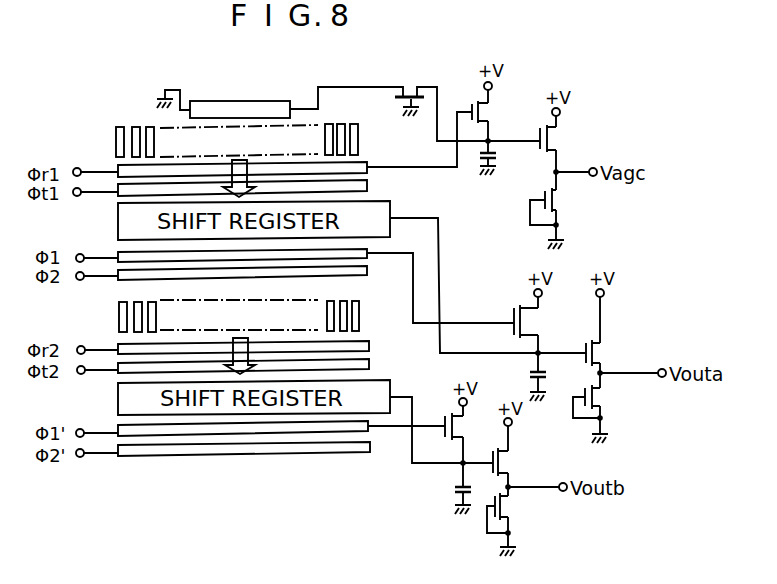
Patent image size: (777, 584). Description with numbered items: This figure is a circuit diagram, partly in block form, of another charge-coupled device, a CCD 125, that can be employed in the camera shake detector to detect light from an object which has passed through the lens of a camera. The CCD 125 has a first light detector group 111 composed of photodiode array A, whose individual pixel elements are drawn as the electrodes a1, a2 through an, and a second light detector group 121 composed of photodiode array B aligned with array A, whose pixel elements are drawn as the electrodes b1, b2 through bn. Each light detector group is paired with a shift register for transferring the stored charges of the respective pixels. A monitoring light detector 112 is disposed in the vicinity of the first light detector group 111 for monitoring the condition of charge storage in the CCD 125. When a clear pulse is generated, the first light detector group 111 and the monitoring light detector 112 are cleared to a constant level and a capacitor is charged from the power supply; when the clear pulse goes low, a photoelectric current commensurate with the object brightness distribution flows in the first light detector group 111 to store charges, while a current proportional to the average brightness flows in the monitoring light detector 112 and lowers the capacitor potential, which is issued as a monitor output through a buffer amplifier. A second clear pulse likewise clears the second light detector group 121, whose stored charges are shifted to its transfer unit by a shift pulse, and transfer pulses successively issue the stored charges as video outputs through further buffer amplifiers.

The CCD 125 is at (138, 105).
The first light detector group 111 is at (302, 132).
The monitoring light detector 112 is at (213, 107).
The second light detector group 121 is at (210, 311).
The n-th transfer electrode of first sensor an is at (117, 128).
The second transfer electrode of first sensor a2 is at (342, 123).
The first transfer electrode of first sensor a1 is at (354, 124).
The n-th transfer electrode of second sensor bn is at (118, 307).
The second transfer electrode of second sensor b2 is at (343, 302).
The first transfer electrode of second sensor b1 is at (359, 309).